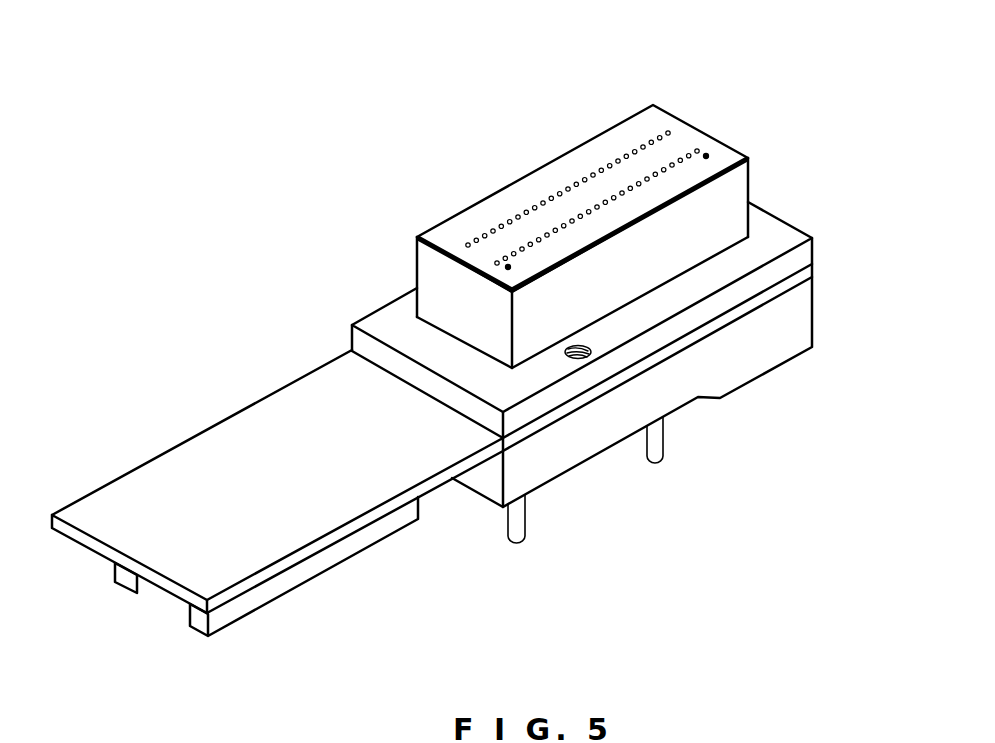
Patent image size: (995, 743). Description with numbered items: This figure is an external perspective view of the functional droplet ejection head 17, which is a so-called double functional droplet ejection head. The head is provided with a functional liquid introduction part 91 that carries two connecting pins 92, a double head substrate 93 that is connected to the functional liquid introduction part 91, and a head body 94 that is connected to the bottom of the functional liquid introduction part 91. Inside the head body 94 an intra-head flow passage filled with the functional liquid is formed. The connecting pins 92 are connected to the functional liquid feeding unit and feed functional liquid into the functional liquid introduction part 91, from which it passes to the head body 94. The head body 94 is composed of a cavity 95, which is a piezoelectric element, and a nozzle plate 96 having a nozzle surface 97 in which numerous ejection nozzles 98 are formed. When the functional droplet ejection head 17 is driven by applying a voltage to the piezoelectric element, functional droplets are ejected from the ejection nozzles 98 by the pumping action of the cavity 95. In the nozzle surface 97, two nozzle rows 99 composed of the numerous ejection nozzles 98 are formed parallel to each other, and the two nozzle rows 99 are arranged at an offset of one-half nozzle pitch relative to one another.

The functional droplet ejection head 17 is at (270, 160).
The functional liquid introduction part 91 is at (834, 374).
The connecting pins 92 is at (518, 543).
The double head substrate 93 is at (840, 280).
The head body 94 is at (642, 190).
The cavity 95 is at (773, 192).
The nozzle plate 96 is at (776, 163).
The nozzle surface 97 is at (473, 220).
The ejection nozzles 98 is at (582, 169).
The nozzle rows 99 is at (628, 139).